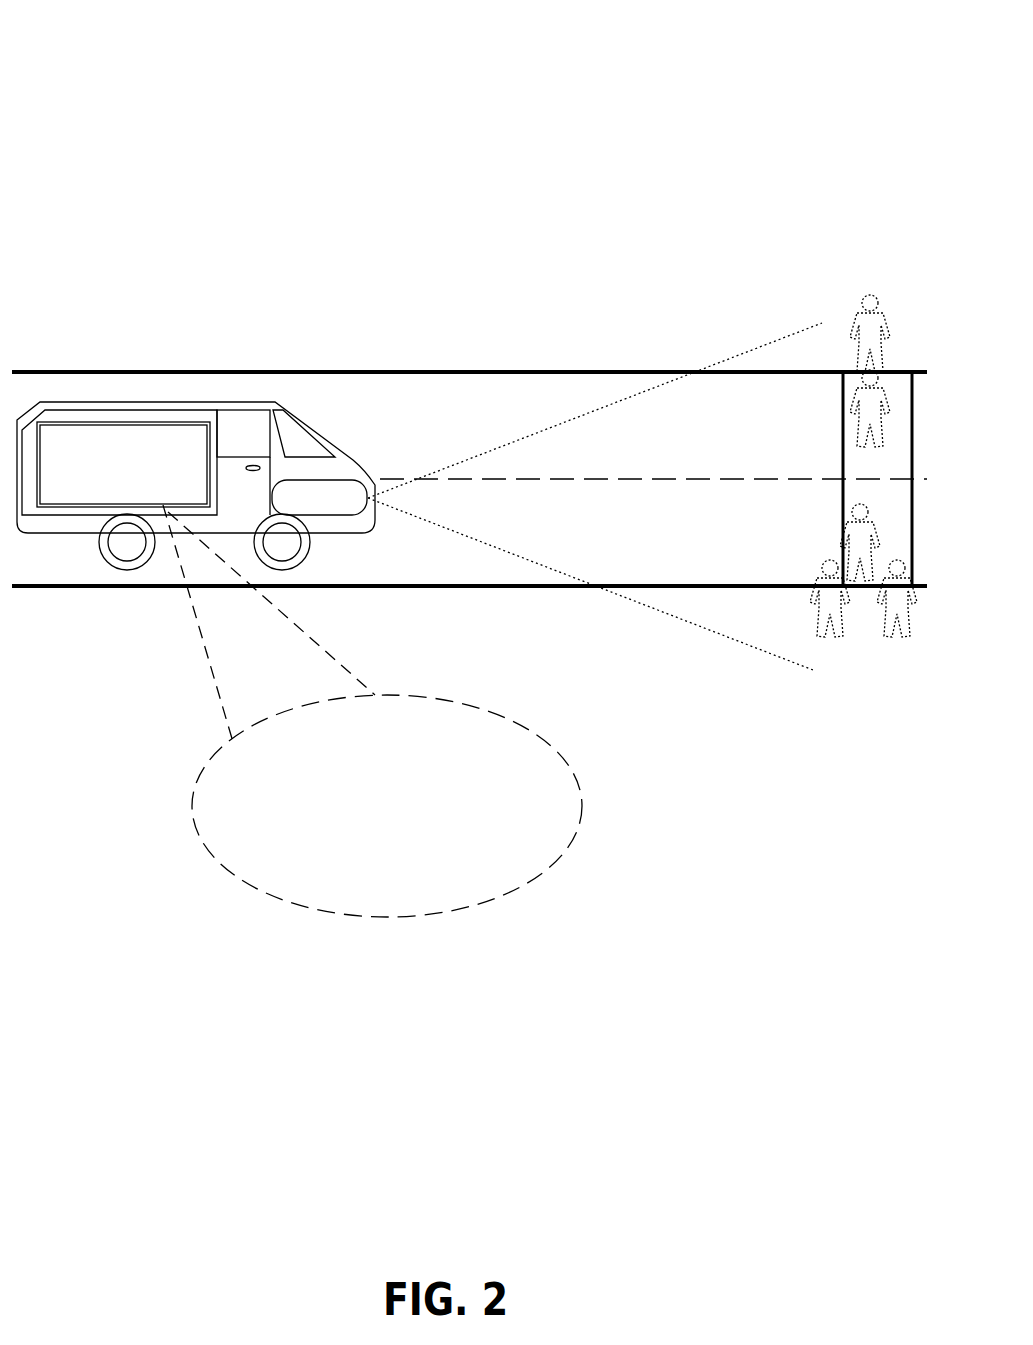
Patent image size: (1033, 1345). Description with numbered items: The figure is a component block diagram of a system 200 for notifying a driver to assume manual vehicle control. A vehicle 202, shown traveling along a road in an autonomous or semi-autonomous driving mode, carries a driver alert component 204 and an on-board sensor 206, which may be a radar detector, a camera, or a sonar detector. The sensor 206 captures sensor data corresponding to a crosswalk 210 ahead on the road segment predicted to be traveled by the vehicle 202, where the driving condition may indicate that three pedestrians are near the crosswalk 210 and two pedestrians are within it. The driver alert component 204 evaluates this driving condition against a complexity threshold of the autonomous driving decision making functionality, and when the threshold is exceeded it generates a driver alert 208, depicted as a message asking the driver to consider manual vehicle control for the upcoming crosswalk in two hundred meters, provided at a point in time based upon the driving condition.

The system 200 is at (158, 46).
The vehicle 202 is at (300, 420).
The driver alert component 204 is at (132, 422).
The sensor 206 is at (343, 467).
The driver alert 208 is at (517, 727).
The crosswalk 210 is at (812, 447).